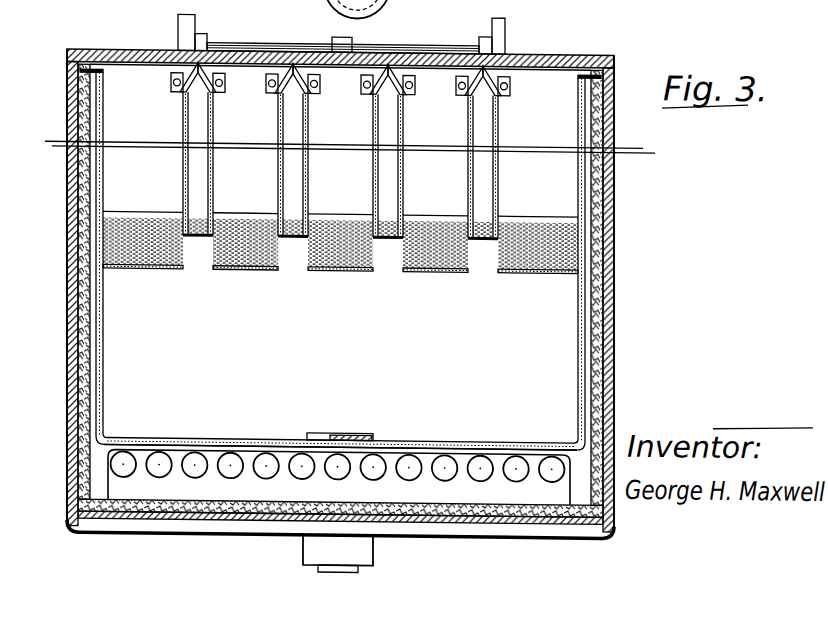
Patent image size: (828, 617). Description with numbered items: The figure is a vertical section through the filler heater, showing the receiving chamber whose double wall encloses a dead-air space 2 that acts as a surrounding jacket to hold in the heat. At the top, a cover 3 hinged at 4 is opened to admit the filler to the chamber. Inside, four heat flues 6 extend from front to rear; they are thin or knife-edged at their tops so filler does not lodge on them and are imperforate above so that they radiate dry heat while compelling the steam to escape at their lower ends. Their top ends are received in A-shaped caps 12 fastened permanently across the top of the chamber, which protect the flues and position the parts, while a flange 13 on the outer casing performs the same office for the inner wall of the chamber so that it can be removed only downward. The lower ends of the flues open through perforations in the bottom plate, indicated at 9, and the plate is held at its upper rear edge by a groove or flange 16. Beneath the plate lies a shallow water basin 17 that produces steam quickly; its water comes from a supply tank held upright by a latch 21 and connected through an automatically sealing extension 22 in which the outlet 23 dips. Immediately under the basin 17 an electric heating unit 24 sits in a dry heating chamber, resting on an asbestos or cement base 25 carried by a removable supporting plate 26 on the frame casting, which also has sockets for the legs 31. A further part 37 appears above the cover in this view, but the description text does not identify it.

The dead-air space 2 is at (95, 71).
The cover 3 is at (543, 49).
The hinge 4 is at (437, 42).
The heat flues 6 is at (278, 116).
The openings 9 is at (195, 268).
The A-shaped caps 12 is at (225, 78).
The flange 13 is at (83, 49).
The flange 16 is at (427, 214).
The water basin 17 is at (428, 439).
The latch 21 is at (336, 36).
The sealing extension 22 is at (358, 433).
The outlet 23 is at (330, 429).
The electric heating unit 24 is at (552, 454).
The asbestos or cement base 25 is at (205, 513).
The removable supporting plate 26 is at (128, 511).
The legs 31 is at (312, 569).
The gauge 37 is at (381, 9).